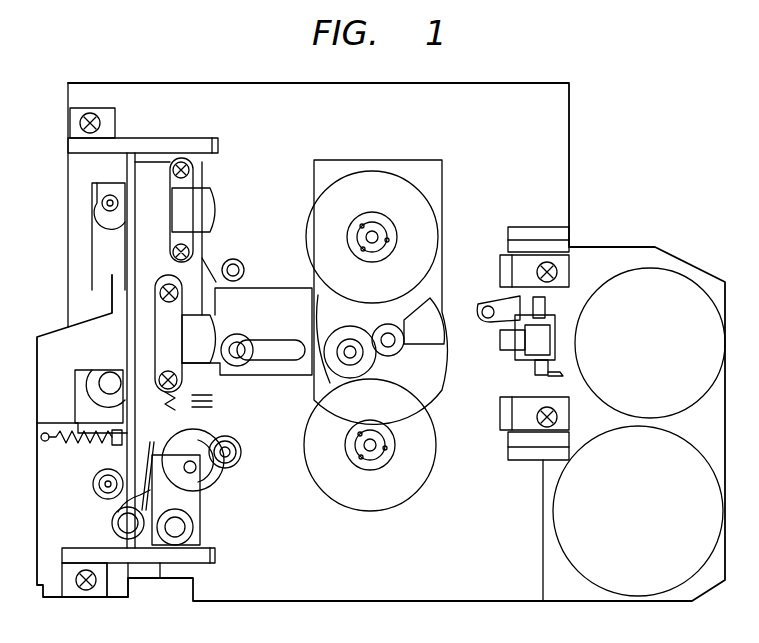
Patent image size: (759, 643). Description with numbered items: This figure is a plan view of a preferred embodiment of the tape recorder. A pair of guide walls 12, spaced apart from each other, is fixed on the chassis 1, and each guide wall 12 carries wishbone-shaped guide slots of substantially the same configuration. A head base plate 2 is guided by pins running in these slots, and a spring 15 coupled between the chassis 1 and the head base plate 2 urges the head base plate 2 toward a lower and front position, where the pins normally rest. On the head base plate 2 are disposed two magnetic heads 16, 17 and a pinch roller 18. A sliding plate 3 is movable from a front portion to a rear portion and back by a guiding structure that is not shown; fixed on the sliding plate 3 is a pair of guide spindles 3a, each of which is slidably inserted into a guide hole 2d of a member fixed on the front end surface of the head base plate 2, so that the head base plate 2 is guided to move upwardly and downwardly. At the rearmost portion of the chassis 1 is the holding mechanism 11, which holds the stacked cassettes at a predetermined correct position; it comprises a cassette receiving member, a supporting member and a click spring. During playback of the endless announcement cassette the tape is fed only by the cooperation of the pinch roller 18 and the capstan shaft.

The chassis 1 is at (522, 601).
The head base plate 2 is at (135, 290).
The guide hole 2d is at (108, 205).
The sliding plate 3 is at (98, 270).
The guide spindle 3a is at (104, 203).
The holding mechanism 11 is at (578, 280).
The guide wall 12 is at (184, 138).
The spring 15 is at (72, 444).
The magnetic head 16 is at (217, 200).
The magnetic head 17 is at (218, 323).
The pinch roller 18 is at (218, 478).